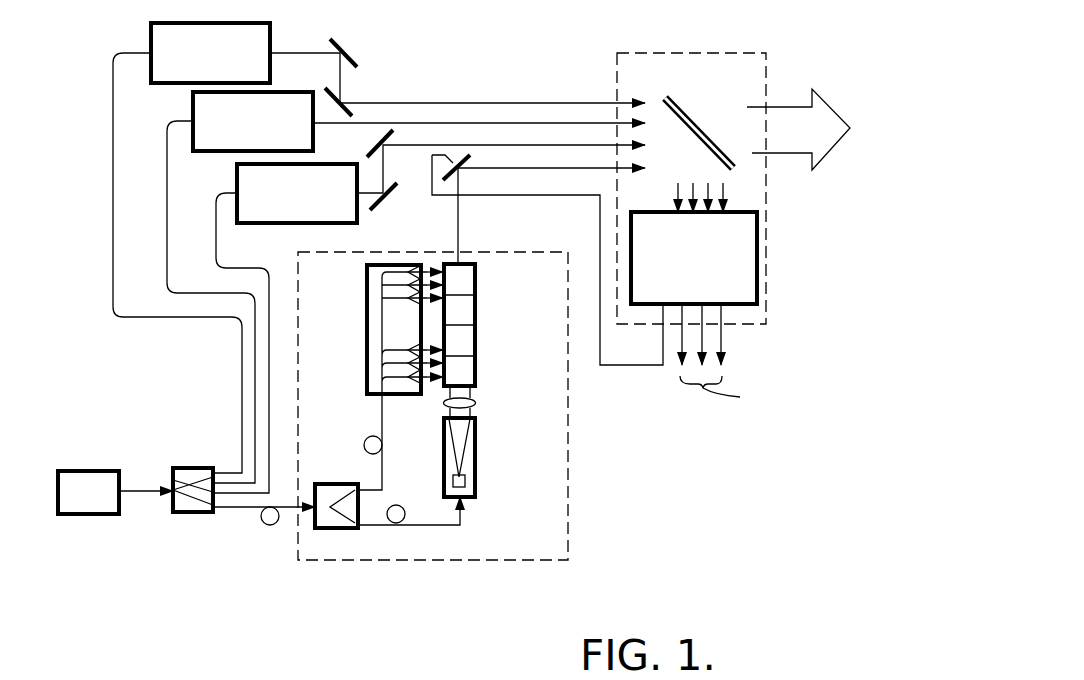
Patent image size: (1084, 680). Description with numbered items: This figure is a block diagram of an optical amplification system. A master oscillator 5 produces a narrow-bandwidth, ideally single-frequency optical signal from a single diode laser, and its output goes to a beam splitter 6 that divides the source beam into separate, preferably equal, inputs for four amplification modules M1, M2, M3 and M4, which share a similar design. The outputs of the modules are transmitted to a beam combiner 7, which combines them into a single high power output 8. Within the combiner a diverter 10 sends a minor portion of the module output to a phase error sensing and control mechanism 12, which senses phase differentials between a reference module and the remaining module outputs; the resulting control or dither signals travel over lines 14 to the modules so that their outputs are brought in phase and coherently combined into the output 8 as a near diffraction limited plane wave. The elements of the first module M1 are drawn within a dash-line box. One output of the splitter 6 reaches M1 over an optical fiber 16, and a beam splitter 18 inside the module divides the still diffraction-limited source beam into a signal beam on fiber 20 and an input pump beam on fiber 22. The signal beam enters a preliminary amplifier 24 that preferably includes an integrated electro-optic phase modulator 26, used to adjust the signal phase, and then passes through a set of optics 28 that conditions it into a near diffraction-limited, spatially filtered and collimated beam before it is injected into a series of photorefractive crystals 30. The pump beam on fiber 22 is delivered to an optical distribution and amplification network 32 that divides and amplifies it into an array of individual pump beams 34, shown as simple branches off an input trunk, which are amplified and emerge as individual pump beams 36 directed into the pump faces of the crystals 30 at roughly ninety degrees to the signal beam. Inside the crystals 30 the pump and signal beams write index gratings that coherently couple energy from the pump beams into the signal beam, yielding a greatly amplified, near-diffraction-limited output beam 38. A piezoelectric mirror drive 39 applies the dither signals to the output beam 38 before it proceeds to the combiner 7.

The master oscillator 5 is at (77, 515).
The beam splitter 6 is at (185, 505).
The optical fiber 16 is at (242, 507).
The beam splitter 18 is at (342, 484).
The fiber 20 is at (427, 523).
The fiber 22 is at (380, 415).
The preliminary amplifier 24 is at (475, 432).
The phase modulator 26 is at (465, 477).
The set of optics 28 is at (475, 403).
The photorefractive crystals 30 is at (485, 327).
The optical distribution and amplification network 32 is at (367, 305).
The pump beams 34 is at (397, 295).
The individual pump beams 36 is at (445, 263).
The output beam 38 is at (458, 227).
The piezoelectric mirror drive 39 is at (453, 163).
The beam combiner 7 is at (668, 53).
The high power output 8 is at (827, 98).
The diverter 10 is at (737, 160).
The phase error sensing and control mechanism 12 is at (758, 243).
The lines 14 is at (722, 332).
The amplification module M1 is at (317, 560).
The amplification module M2 is at (237, 223).
The amplification module M3 is at (193, 151).
The amplification module M4 is at (150, 83).